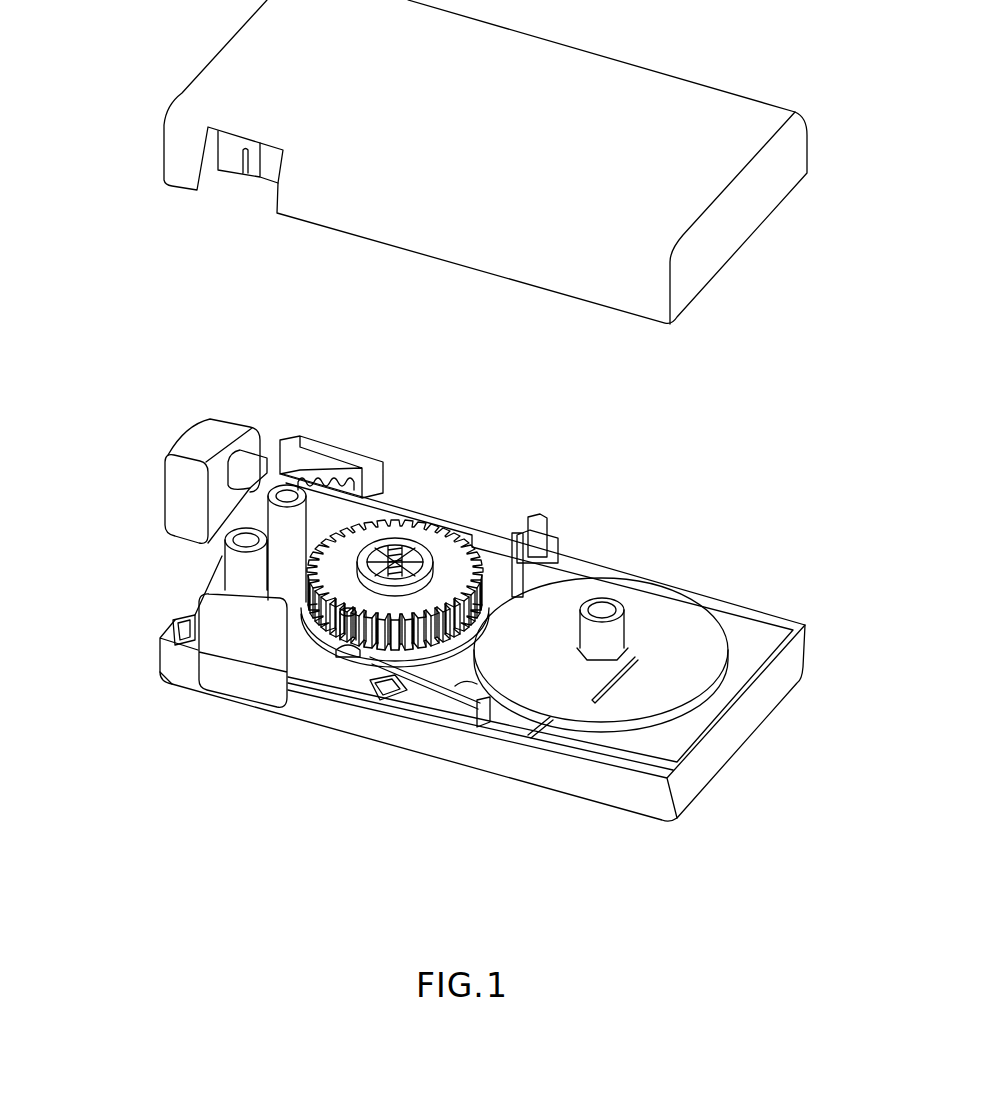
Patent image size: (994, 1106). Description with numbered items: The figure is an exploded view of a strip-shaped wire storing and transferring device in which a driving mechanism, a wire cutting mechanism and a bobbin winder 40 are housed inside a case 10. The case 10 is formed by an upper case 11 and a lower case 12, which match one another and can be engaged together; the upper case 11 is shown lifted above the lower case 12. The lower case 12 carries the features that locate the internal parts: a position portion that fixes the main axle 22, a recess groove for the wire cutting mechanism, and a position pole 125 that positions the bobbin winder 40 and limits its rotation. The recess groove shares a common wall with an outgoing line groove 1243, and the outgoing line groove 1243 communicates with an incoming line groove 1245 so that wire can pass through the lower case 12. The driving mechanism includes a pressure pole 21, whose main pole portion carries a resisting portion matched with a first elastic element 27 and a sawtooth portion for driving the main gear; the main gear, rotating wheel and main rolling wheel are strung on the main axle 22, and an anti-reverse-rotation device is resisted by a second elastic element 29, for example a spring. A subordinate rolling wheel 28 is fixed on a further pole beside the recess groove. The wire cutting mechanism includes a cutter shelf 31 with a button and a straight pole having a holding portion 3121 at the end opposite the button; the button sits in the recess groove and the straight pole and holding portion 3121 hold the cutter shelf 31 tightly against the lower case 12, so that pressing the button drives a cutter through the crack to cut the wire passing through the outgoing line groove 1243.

The case 10 is at (833, 243).
The upper case 11 is at (520, 141).
The lower case 12 is at (718, 765).
The pressure pole 21 is at (180, 491).
The main axle 22 is at (392, 547).
The first elastic element 27 is at (322, 467).
The subordinate rolling wheel 28 is at (343, 668).
The second elastic element 29 is at (413, 560).
The cutter shelf 31 is at (230, 680).
The bobbin winder 40 is at (678, 625).
The position pole 125 is at (603, 598).
The outgoing line groove 1243 is at (192, 624).
The incoming line groove 1245 is at (477, 673).
The holding portion 3121 is at (397, 700).